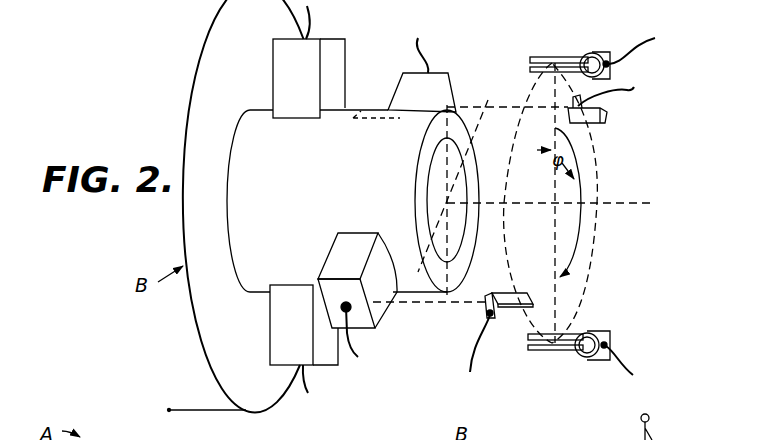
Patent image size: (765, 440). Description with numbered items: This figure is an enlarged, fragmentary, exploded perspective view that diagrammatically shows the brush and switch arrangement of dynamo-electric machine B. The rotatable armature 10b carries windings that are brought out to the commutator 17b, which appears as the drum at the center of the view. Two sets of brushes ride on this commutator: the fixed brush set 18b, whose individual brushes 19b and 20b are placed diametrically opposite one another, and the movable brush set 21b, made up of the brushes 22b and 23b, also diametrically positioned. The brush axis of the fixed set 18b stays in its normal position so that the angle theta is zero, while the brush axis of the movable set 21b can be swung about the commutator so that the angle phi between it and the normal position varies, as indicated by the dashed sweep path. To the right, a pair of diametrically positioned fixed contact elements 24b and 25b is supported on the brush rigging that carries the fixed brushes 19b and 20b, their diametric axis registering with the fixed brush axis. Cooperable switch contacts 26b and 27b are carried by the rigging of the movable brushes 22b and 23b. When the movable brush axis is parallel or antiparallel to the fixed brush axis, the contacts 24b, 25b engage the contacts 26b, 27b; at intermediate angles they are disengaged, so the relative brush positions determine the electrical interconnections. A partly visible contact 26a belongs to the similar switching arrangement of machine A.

The rotatable armature 10b is at (230, 412).
The commutator 17b is at (440, 201).
The fixed brush set 18b is at (342, 27).
The fixed brush 19b is at (290, 66).
The fixed brush 20b is at (330, 358).
The movable brush set 21b is at (455, 56).
The movable brush 22b is at (441, 94).
The movable brush 23b is at (380, 310).
The fixed contact element 24b is at (610, 53).
The fixed contact element 25b is at (600, 334).
The switch contact 26b is at (607, 117).
The switch contact 27b is at (516, 306).
The sensor (adjacent figure) 26a is at (188, 425).